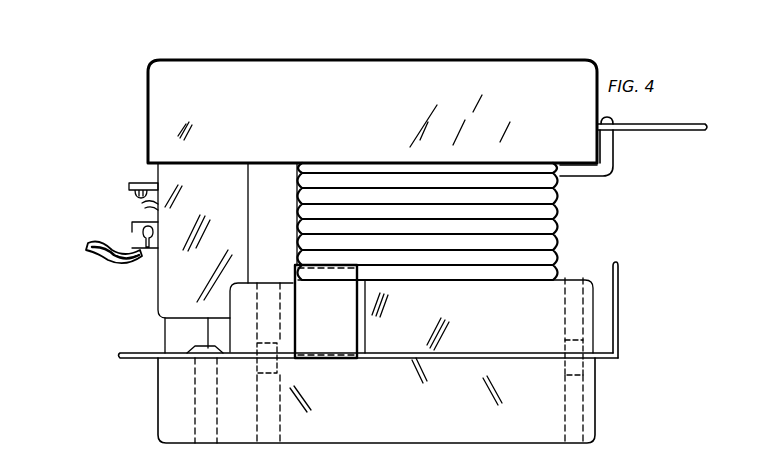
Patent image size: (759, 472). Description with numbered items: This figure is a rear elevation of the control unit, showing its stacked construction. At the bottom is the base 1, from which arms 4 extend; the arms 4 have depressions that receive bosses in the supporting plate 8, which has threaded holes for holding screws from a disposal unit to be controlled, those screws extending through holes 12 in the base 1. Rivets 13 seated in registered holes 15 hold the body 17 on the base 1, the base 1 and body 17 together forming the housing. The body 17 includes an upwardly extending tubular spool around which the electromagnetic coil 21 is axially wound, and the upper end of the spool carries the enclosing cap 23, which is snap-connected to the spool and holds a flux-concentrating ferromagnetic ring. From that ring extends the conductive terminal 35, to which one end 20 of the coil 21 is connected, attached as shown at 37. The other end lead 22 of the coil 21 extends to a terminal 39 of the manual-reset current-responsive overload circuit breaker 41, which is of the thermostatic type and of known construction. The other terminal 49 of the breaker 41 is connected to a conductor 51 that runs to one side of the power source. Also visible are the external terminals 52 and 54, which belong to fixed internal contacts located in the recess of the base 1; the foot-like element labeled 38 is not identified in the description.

The base 1 is at (444, 424).
The arms 4 is at (168, 392).
The supporting plate 8 is at (125, 360).
The holes 12 is at (195, 415).
The rivets 13 is at (280, 368).
The registered holes 15 is at (258, 322).
The body 17 is at (432, 316).
The end of the coil 20 is at (620, 176).
The electromagnetic coil 21 is at (560, 264).
The end lead 22 is at (146, 206).
The enclosing cap 23 is at (384, 134).
The conductive terminal 35 is at (676, 122).
The attachment of coil end 37 is at (612, 120).
The foot 38 is at (187, 335).
The terminal 39 is at (133, 182).
The manual-reset current-responsive overload circuit breaker 41 is at (235, 214).
The terminal 49 is at (131, 234).
The conductor 51 is at (112, 264).
The external terminal 52 is at (342, 330).
The external terminal 54 is at (620, 325).